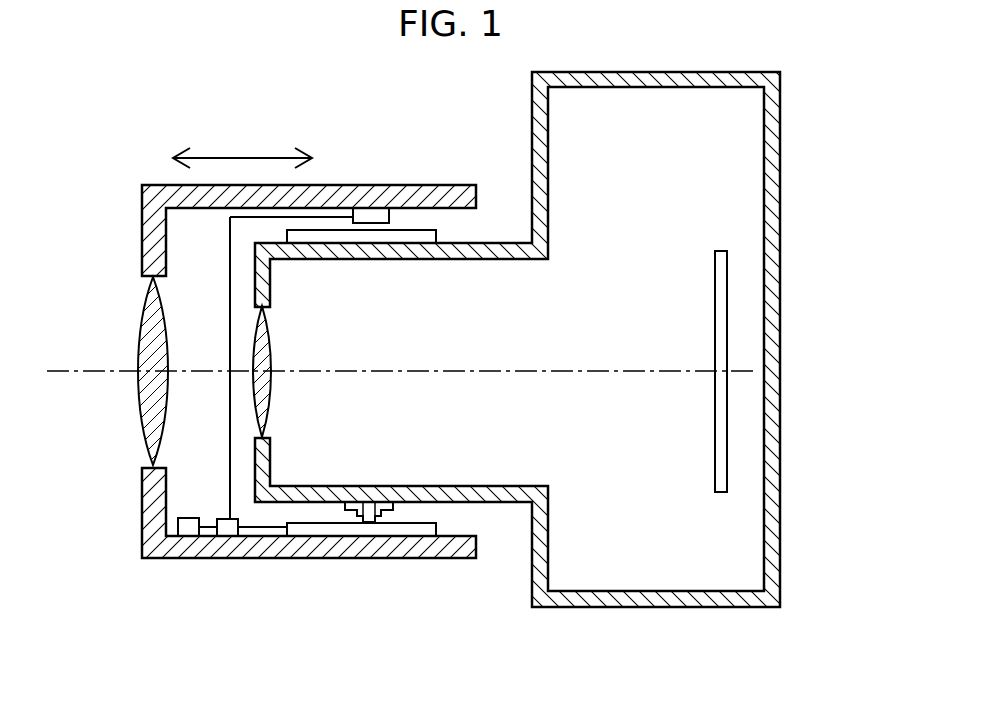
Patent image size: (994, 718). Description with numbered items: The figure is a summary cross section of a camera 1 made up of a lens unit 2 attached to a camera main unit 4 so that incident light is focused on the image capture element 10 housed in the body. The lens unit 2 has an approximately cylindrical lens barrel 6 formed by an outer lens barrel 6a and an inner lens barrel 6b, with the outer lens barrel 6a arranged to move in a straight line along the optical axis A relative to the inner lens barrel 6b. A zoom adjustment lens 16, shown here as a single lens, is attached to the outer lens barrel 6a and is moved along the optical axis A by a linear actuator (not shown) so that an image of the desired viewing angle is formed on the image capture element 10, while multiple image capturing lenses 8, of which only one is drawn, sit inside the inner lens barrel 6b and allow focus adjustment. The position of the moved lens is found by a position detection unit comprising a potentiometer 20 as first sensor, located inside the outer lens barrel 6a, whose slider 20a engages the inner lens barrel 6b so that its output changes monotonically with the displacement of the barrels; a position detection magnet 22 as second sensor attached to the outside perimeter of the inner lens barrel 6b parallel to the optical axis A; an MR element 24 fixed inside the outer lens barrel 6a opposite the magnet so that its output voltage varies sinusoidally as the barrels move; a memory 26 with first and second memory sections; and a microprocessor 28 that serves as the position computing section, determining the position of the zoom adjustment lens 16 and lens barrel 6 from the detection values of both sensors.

The camera 1 is at (129, 118).
The lens unit 2 is at (320, 584).
The camera main unit 4 is at (783, 133).
The lens barrel 6 is at (288, 635).
The outer lens barrel 6a is at (186, 558).
The inner lens barrel 6b is at (278, 496).
The image capturing lens 8 is at (264, 337).
The image capture element 10 is at (718, 282).
The zoom adjustment lens 16 is at (153, 315).
The potentiometer 20 is at (417, 558).
The slider 20a is at (371, 511).
The position detection magnet 22 is at (418, 236).
The MR element 24 is at (370, 216).
The memory 26 is at (190, 518).
The microprocessor 28 is at (227, 518).
The optical axis A is at (73, 373).